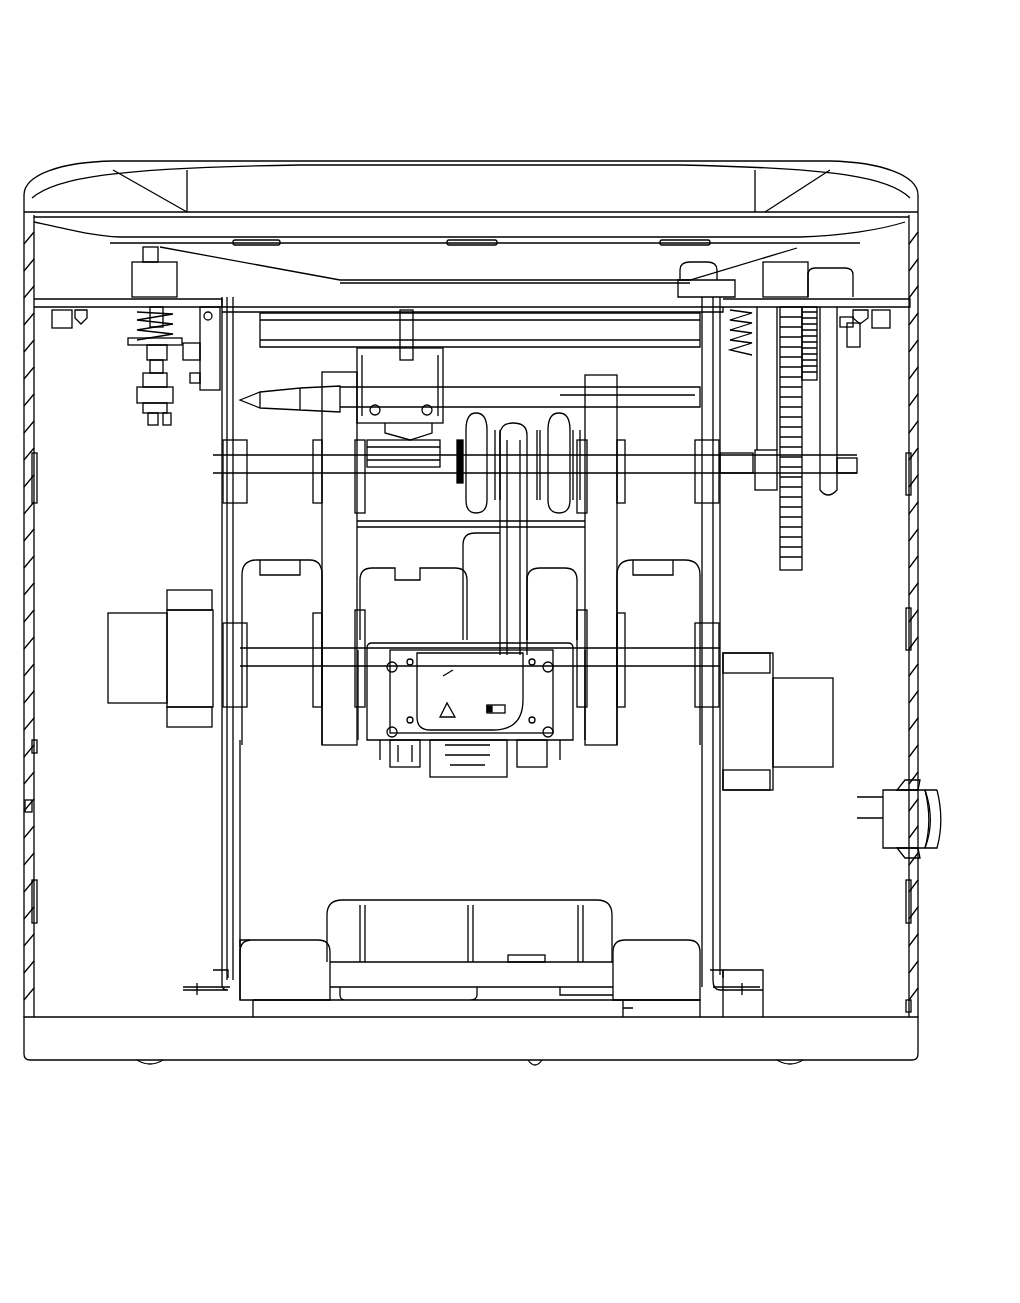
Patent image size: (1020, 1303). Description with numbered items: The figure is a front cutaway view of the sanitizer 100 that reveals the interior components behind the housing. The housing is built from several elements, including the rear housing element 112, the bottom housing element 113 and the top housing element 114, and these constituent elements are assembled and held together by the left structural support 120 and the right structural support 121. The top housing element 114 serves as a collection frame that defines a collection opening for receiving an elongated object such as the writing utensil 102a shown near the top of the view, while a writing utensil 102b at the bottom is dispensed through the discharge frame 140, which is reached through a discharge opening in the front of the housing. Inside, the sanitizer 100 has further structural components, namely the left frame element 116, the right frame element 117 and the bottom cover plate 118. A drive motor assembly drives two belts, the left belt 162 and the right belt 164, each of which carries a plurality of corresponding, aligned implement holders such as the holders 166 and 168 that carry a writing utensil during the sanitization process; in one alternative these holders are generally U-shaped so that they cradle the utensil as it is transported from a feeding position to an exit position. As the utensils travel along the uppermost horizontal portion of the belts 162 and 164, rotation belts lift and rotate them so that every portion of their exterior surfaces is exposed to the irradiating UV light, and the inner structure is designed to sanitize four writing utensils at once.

The sanitizer 100 is at (166, 60).
The writing utensil 102a is at (512, 393).
The writing utensil 102b is at (538, 975).
The rear housing element 112 is at (28, 560).
The bottom housing element 113 is at (850, 1050).
The top housing element 114 is at (681, 163).
The left frame element 116 is at (220, 857).
The right frame element 117 is at (723, 898).
The bottom cover plate 118 is at (447, 1010).
The left structural support 120 is at (140, 272).
The right structural support 121 is at (780, 270).
The discharge frame 140 is at (670, 985).
The left belt 162 is at (330, 545).
The right belt 164 is at (605, 540).
The implement holder 166 is at (340, 383).
The implement holder 168 is at (524, 619).